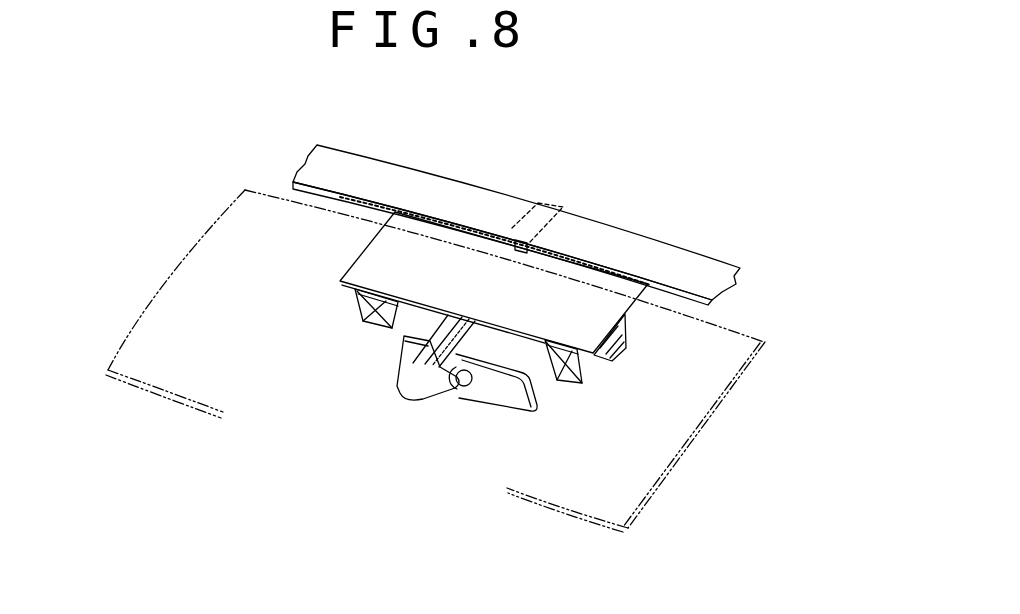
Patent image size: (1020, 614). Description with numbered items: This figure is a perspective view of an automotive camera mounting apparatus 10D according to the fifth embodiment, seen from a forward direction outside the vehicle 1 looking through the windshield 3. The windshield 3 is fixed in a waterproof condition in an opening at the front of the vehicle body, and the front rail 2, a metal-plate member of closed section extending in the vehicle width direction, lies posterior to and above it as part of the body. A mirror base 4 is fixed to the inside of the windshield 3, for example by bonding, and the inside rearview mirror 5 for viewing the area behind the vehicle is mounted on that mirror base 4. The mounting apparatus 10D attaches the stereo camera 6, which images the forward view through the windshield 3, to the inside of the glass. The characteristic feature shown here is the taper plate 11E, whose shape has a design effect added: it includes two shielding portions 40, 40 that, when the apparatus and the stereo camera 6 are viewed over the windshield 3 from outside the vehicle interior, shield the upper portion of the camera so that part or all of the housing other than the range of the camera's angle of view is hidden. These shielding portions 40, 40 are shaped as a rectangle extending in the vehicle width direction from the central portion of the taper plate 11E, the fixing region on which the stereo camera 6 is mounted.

The vehicle 1 is at (162, 129).
The front rail 2 is at (712, 272).
The windshield 3 is at (644, 451).
The mirror base 4 is at (400, 377).
The inside rearview mirror 5 is at (498, 400).
The stereo camera 6 is at (350, 329).
The automotive camera mounting apparatus 10D is at (483, 241).
The taper plate 11E is at (555, 283).
The shielding portions 40 is at (373, 263).